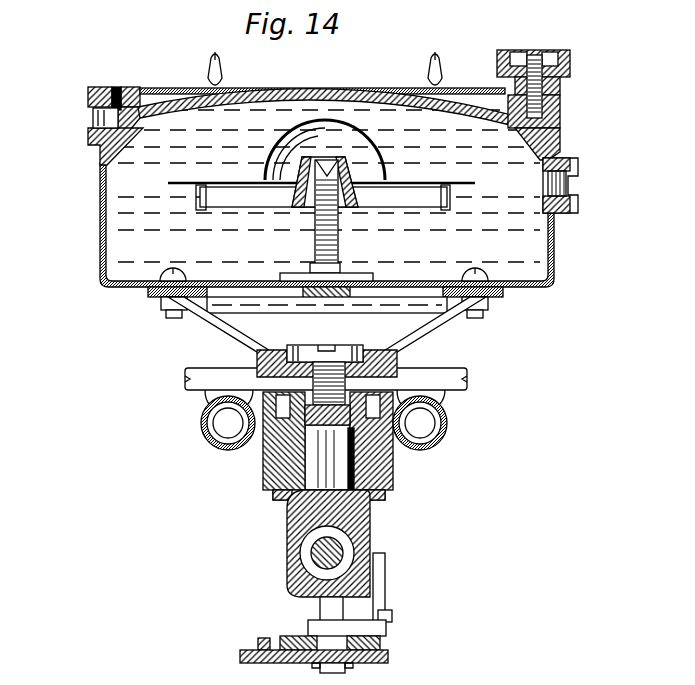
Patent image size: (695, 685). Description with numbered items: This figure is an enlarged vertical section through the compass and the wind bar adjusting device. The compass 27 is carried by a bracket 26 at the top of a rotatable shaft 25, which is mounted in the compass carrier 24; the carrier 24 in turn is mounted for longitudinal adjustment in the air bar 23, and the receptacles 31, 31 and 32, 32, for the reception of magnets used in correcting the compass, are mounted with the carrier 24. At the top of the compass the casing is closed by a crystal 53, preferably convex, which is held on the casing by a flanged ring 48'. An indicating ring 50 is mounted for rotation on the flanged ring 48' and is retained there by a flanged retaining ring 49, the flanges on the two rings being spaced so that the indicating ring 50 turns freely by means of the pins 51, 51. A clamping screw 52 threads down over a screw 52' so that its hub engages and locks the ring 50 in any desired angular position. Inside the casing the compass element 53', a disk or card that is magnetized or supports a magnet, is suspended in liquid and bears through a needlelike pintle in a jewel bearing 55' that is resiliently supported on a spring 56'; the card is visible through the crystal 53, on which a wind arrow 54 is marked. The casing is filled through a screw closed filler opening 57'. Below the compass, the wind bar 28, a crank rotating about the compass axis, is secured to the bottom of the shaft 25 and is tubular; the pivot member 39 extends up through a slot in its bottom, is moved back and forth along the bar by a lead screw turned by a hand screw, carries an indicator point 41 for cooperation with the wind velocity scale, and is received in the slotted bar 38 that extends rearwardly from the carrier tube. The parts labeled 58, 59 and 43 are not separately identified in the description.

The compass 27 is at (100, 217).
The flanged ring 48' is at (75, 118).
The flanged retaining ring 49 is at (65, 91).
The indicating ring 50 is at (145, 90).
The pins 51 is at (215, 58).
The clamping screw 52 is at (518, 100).
The screw 52' is at (541, 65).
The crystal 53 is at (322, 69).
The compass element 53' is at (304, 191).
The wind arrow 54 is at (345, 165).
The jewel bearing 55' is at (362, 182).
The spring 56' is at (346, 229).
The screw closed filler opening 57' is at (586, 173).
The bolt 58 is at (447, 313).
The gasket 59 is at (305, 90).
The bracket 26 is at (380, 354).
The receptacles 31 is at (207, 368).
The receptacles 32 is at (201, 425).
The air bar 23 is at (268, 452).
The compass carrier 24 is at (267, 470).
The rotatable shaft 25 is at (390, 493).
The wind bar 28 is at (270, 557).
The pivot member 39 is at (332, 610).
The indicator point 41 is at (385, 595).
The slotted bar 38 is at (378, 640).
The plate 43 is at (240, 652).